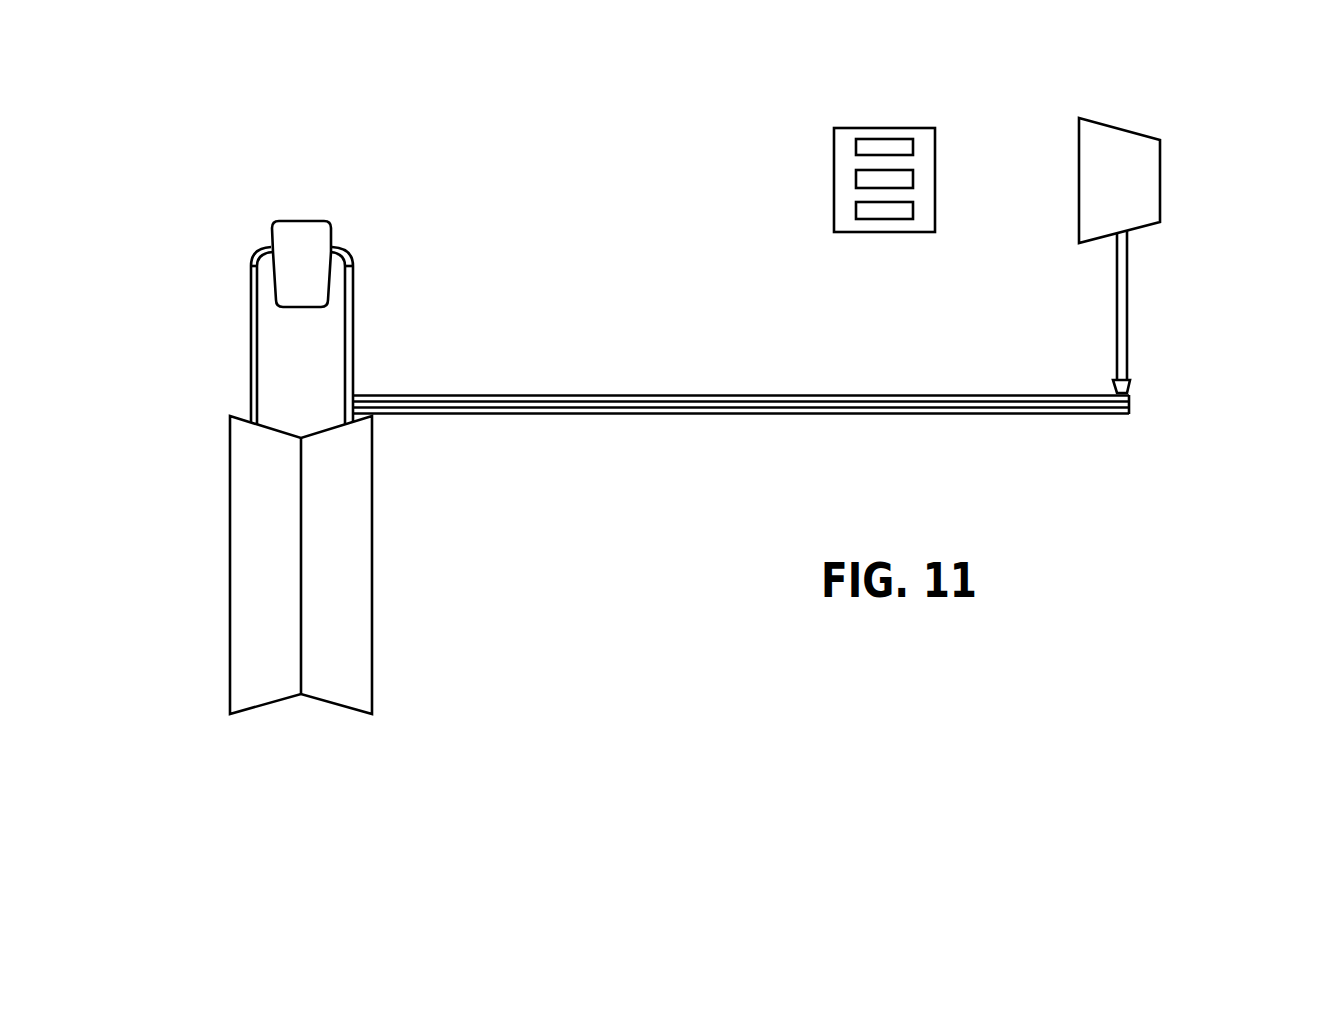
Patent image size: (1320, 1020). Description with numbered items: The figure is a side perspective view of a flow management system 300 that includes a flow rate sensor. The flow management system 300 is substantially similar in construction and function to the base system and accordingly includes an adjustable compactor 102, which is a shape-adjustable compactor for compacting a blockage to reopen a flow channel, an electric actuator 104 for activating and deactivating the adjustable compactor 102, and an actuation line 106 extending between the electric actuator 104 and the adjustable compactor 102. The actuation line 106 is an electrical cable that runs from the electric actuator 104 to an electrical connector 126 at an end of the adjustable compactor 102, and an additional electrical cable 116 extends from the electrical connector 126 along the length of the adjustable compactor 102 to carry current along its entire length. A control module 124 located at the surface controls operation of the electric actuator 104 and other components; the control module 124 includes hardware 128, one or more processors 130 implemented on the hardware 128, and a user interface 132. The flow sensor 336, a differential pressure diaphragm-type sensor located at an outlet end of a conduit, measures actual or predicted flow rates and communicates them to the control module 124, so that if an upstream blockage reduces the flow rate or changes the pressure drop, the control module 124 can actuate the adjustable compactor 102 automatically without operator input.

The flow management system 300 is at (412, 146).
The flow sensor 336 is at (227, 308).
The adjustable compactor 102 is at (714, 427).
The electrical cable 116 is at (762, 382).
The electrical connector 126 is at (1130, 385).
The actuation line 106 is at (1127, 290).
The electric actuator 104 is at (1160, 175).
The control module 124 is at (935, 130).
The hardware 128 is at (856, 147).
The processors 130 is at (856, 178).
The user interface 132 is at (856, 210).